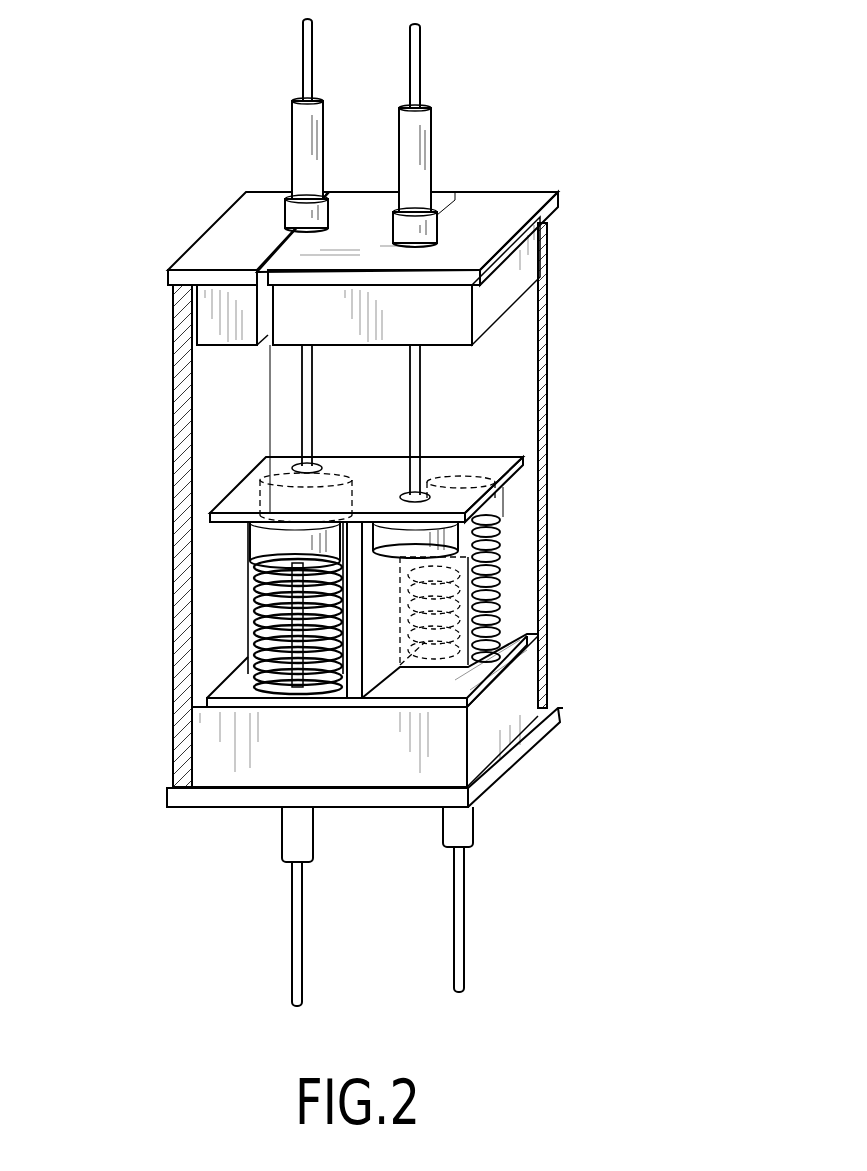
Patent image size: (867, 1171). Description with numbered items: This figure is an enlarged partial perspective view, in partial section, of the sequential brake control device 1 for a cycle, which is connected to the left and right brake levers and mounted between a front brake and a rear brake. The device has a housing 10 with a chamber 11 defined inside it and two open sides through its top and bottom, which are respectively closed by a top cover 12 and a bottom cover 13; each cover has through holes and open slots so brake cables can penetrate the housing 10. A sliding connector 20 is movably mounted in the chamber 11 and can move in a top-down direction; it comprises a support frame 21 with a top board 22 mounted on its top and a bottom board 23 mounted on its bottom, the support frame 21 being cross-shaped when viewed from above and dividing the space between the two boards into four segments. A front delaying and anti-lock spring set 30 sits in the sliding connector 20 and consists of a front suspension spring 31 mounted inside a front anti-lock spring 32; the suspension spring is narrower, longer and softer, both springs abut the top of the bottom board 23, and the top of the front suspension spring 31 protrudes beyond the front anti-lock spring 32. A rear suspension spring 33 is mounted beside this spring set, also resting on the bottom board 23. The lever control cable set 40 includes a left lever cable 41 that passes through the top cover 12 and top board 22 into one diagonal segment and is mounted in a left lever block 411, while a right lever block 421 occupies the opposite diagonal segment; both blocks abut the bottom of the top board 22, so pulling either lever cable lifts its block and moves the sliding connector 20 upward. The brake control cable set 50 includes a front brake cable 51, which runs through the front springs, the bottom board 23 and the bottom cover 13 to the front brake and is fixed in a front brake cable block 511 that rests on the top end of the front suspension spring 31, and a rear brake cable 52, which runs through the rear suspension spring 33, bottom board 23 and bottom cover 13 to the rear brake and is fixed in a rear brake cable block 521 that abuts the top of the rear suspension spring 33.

The brake control device 1 is at (160, 200).
The housing 10 is at (180, 387).
The chamber 11 is at (508, 353).
The top cover 12 is at (517, 202).
The bottom cover 13 is at (510, 762).
The sliding connector 20 is at (497, 576).
The support frame 21 is at (472, 665).
The top board 22 is at (520, 463).
The bottom board 23 is at (463, 687).
The front delaying and anti-lock spring set 30 is at (230, 638).
The front suspension spring 31 is at (245, 565).
The front anti-lock spring 32 is at (262, 683).
The rear suspension spring 33 is at (493, 617).
The lever control cable set 40 is at (432, 50).
The left lever cable 41 is at (299, 143).
The left lever block 411 is at (268, 502).
The right lever block 421 is at (455, 533).
The brake control cable set 50 is at (495, 892).
The front brake cable 51 is at (290, 833).
The front brake cable block 511 is at (268, 545).
The rear brake cable 52 is at (467, 828).
The rear brake cable block 521 is at (453, 472).